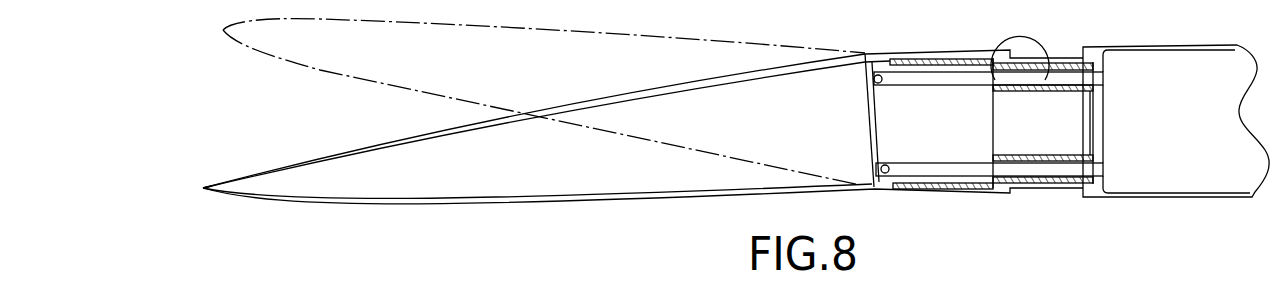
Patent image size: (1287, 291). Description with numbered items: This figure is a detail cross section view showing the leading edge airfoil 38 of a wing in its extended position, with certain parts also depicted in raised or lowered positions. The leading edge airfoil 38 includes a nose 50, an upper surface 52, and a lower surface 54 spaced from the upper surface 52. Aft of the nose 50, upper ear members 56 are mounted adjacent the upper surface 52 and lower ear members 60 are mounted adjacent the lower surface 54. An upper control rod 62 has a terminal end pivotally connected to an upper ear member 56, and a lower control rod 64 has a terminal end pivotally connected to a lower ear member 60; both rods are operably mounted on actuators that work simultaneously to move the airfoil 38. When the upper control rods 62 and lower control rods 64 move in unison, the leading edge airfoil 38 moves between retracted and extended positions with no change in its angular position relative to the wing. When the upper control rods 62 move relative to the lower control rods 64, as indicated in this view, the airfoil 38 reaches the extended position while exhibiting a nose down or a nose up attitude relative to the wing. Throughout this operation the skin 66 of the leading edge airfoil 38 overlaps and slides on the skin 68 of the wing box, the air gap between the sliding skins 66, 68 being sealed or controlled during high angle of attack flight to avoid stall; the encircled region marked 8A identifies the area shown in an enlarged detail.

The leading edge airfoil 38 is at (652, 83).
The nose 50 is at (203, 188).
The upper surface 52 is at (463, 124).
The lower surface 54 is at (543, 203).
The upper ear members 56 is at (871, 80).
The lower ear members 60 is at (877, 168).
The upper control rod 62 is at (1103, 73).
The lower control rod 64 is at (1103, 166).
The skin of the leading edge airfoil 66 is at (957, 190).
The skin of the wing box 68 is at (1057, 187).
The detail view region FIG. 8A is at (1013, 35).